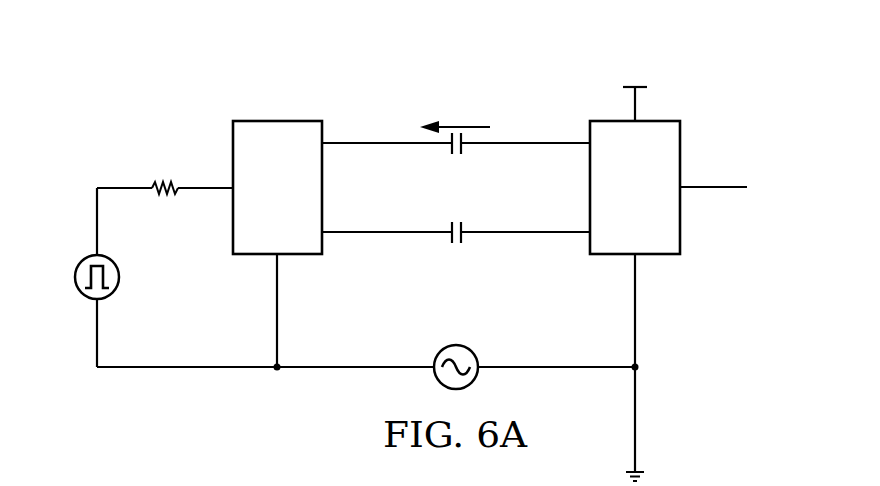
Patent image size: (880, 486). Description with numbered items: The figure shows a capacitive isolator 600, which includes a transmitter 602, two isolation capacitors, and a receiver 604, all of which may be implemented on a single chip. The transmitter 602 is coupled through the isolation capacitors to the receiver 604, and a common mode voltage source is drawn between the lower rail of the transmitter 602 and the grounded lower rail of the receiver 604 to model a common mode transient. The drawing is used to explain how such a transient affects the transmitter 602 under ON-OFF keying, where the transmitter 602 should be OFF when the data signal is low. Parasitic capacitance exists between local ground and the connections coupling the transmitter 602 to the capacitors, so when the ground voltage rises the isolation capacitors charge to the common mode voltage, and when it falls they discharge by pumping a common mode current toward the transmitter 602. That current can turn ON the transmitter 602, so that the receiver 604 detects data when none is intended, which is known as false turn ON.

The capacitive isolator 600 is at (136, 58).
The transmitter 602 is at (298, 221).
The receiver 604 is at (657, 221).